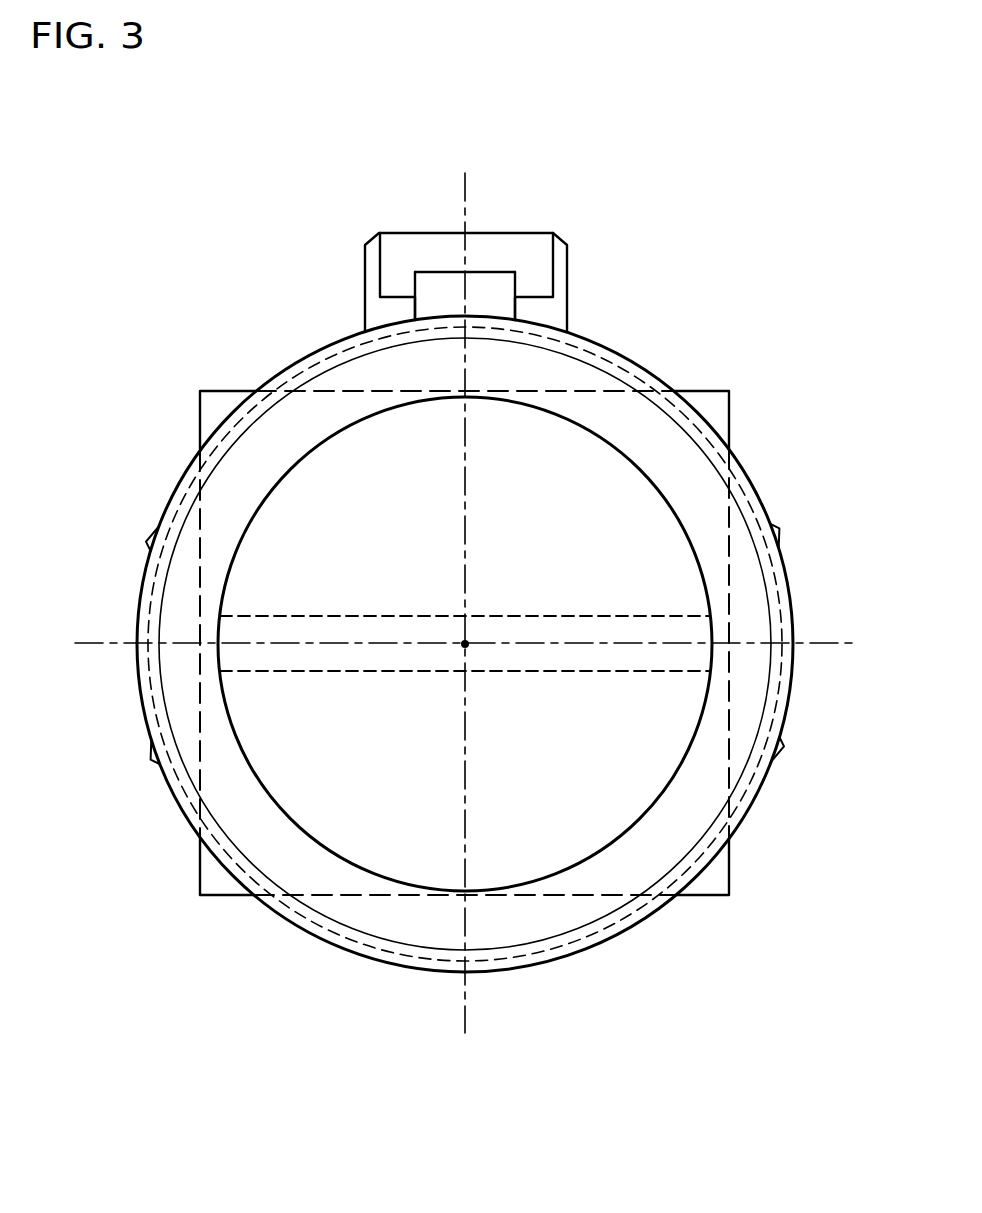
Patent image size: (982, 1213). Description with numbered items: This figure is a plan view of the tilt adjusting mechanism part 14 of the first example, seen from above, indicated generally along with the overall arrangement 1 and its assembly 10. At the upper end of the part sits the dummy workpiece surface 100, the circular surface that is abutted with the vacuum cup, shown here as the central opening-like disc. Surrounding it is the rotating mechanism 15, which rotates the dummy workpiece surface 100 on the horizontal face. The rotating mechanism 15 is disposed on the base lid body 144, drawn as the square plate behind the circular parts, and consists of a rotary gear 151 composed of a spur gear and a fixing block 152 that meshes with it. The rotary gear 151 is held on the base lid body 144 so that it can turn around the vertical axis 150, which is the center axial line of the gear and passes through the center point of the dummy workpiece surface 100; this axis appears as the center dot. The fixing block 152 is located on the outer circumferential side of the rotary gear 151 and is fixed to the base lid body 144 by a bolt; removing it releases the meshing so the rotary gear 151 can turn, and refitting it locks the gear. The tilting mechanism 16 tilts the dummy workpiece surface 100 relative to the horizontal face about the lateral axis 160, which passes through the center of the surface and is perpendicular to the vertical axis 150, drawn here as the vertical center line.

The electronic apparatus 1 is at (752, 187).
The main body 10 is at (752, 237).
The tilt adjusting mechanism part 14 is at (752, 297).
The rotating mechanism 15 is at (305, 350).
The tilting mechanism 16 is at (270, 678).
The dummy workpiece surface 100 is at (367, 770).
The base lid body 144 is at (200, 877).
The vertical axis 150 is at (465, 645).
The rotary gear 151 is at (140, 698).
The fixing block 152 is at (445, 290).
The lateral axis 160 is at (468, 212).